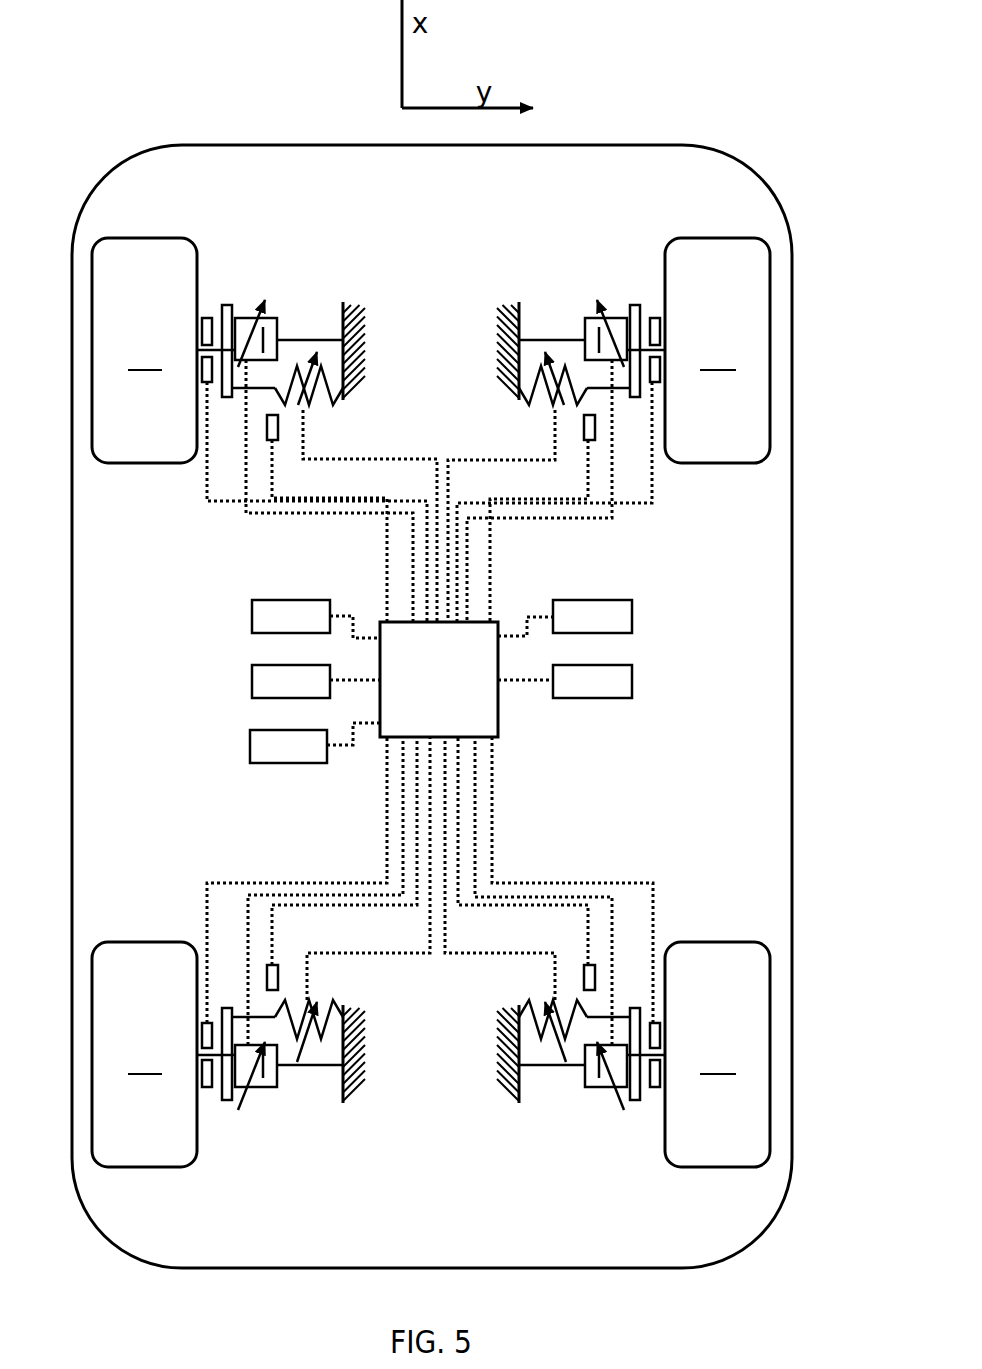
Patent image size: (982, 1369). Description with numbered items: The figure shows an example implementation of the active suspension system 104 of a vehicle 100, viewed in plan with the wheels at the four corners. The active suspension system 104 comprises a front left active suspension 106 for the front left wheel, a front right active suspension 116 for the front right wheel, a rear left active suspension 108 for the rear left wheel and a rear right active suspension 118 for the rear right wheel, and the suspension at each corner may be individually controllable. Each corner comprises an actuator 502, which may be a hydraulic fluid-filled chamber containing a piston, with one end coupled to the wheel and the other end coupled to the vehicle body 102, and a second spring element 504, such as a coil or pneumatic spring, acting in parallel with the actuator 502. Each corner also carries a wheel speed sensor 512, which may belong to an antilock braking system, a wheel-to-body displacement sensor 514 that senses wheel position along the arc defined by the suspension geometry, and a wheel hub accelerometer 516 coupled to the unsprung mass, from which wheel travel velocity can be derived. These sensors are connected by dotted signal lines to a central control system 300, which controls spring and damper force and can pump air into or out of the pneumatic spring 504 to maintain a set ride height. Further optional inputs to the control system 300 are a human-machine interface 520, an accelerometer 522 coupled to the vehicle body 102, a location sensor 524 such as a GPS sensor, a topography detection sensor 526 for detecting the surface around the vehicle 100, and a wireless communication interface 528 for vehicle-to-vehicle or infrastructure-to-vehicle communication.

The vehicle 100 is at (730, 160).
The vehicle body 102 is at (360, 353).
The active suspension system 104 is at (220, 112).
The front left active suspension 106 is at (272, 218).
The front right active suspension 116 is at (586, 218).
The rear left active suspension 108 is at (197, 910).
The rear right active suspension 118 is at (667, 912).
The control system 300 is at (498, 737).
The actuator 502 is at (242, 317).
The second spring element 504 is at (318, 402).
The wheel speed sensor 512 is at (207, 318).
The wheel-to-body displacement sensor 514 is at (273, 440).
The wheel hub accelerometer 516 is at (200, 360).
The human-machine interface 520 is at (270, 629).
The accelerometer 522 is at (270, 694).
The location sensor 524 is at (571, 629).
The topography detection sensor 526 is at (571, 694).
The wireless communication interface 528 is at (268, 759).